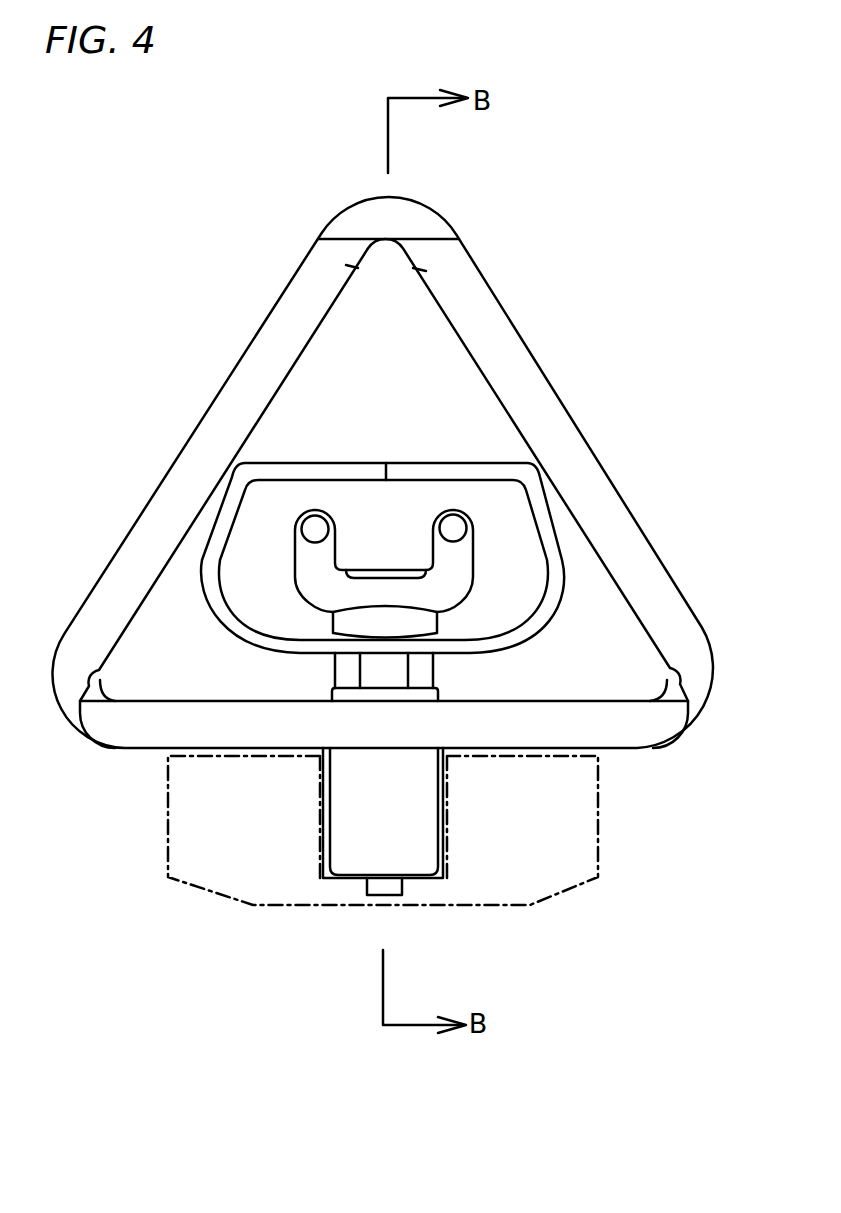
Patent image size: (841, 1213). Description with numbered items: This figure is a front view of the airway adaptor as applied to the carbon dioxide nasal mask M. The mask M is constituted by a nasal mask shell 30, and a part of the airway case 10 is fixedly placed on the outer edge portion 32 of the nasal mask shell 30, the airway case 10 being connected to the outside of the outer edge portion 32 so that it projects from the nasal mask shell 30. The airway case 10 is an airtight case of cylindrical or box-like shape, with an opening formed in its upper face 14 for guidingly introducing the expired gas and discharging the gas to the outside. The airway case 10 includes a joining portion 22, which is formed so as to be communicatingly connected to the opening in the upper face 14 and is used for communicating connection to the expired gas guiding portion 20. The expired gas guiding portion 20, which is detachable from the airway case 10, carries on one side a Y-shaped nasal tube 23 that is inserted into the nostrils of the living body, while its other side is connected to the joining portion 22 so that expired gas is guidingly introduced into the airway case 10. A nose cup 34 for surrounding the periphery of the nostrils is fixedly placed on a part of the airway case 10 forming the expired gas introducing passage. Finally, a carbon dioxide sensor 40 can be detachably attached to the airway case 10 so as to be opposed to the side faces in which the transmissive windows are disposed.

The airway case 10 is at (506, 867).
The upper face 14 is at (392, 750).
The expired gas guiding portion 20 is at (382, 513).
The joining portion 22 is at (378, 623).
The Y-shaped nasal tube 23 is at (457, 557).
The nasal mask shell 30 is at (448, 378).
The outer edge portion 32 is at (133, 731).
The nose cup 34 is at (523, 575).
The carbon dioxide sensor 40 is at (572, 845).
The carbon dioxide nasal mask M is at (382, 472).